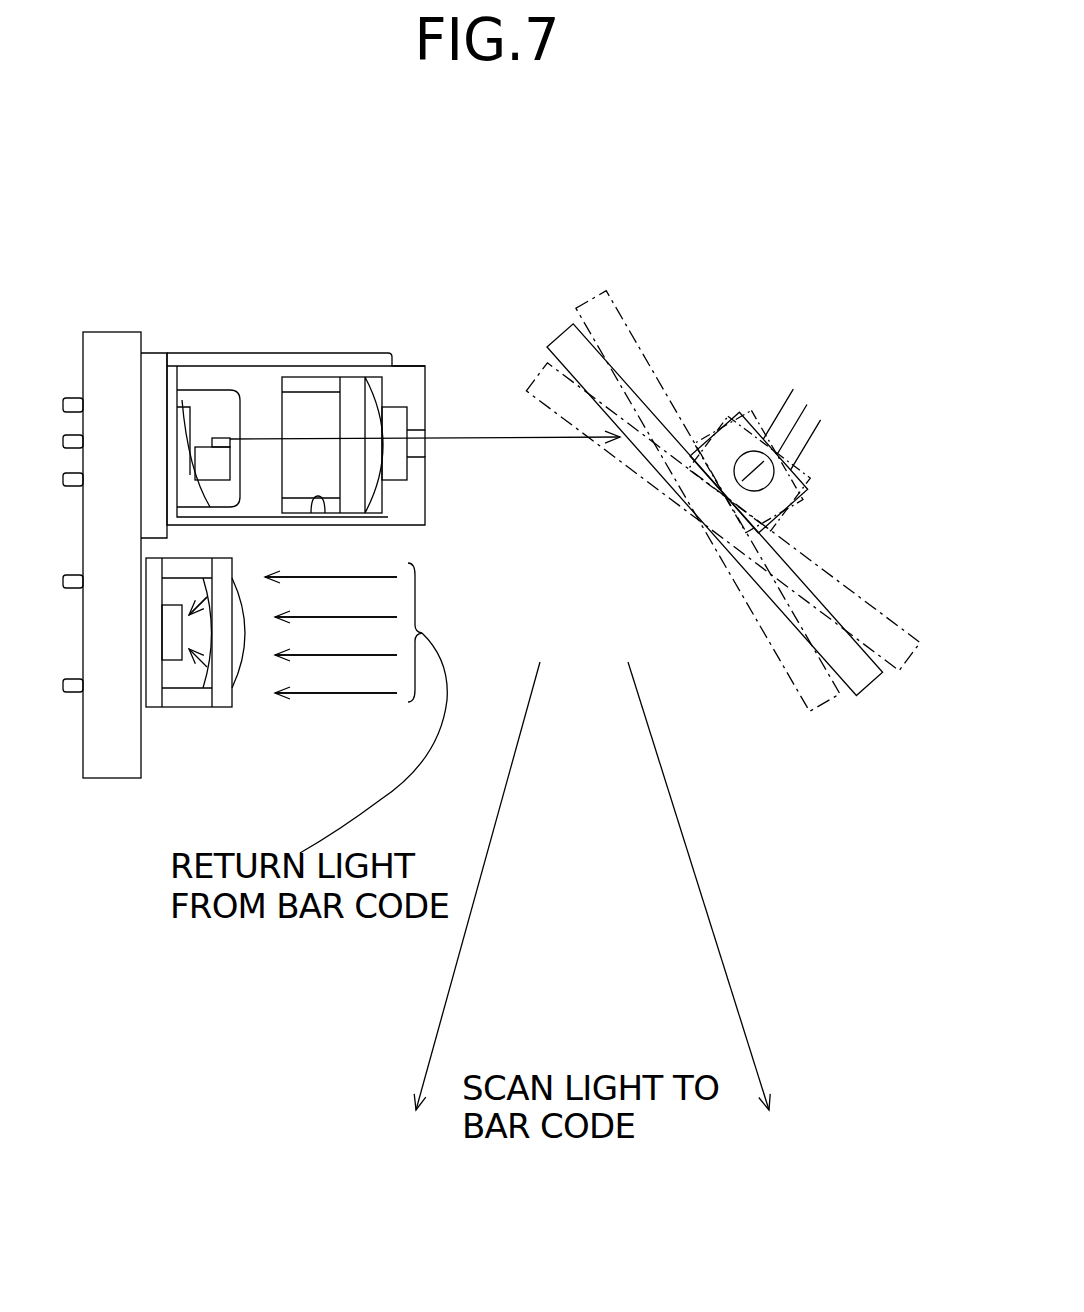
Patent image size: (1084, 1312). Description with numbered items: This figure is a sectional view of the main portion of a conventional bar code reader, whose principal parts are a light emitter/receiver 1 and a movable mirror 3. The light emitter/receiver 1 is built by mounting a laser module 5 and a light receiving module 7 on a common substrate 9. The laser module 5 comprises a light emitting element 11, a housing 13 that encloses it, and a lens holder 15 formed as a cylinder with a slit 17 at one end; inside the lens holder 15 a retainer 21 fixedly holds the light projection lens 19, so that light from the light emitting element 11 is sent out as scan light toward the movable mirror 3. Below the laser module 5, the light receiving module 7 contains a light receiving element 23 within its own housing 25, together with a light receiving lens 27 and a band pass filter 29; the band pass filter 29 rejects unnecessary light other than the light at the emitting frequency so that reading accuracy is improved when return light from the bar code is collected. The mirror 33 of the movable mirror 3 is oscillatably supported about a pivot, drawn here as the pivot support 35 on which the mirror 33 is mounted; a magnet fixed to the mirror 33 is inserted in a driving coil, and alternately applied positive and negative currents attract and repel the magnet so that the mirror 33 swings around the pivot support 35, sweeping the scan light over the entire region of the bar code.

The light emitter/receiver 1 is at (382, 257).
The movable mirror 3 is at (810, 284).
The laser module 5 is at (430, 347).
The light receiving module 7 is at (287, 714).
The substrate 9 is at (112, 332).
The light emitting element 11 is at (217, 437).
The housing 13 is at (188, 368).
The lens holder 15 is at (434, 490).
The slit 17 is at (432, 432).
The light projection lens 19 is at (355, 385).
The retainer 21 is at (320, 514).
The light receiving element 23 is at (170, 663).
The housing 25 is at (148, 707).
The light receiving lens 27 is at (250, 692).
The band pass filter 29 is at (222, 707).
The mirror 33 is at (873, 689).
The mirror pivot bracket 35 is at (756, 451).